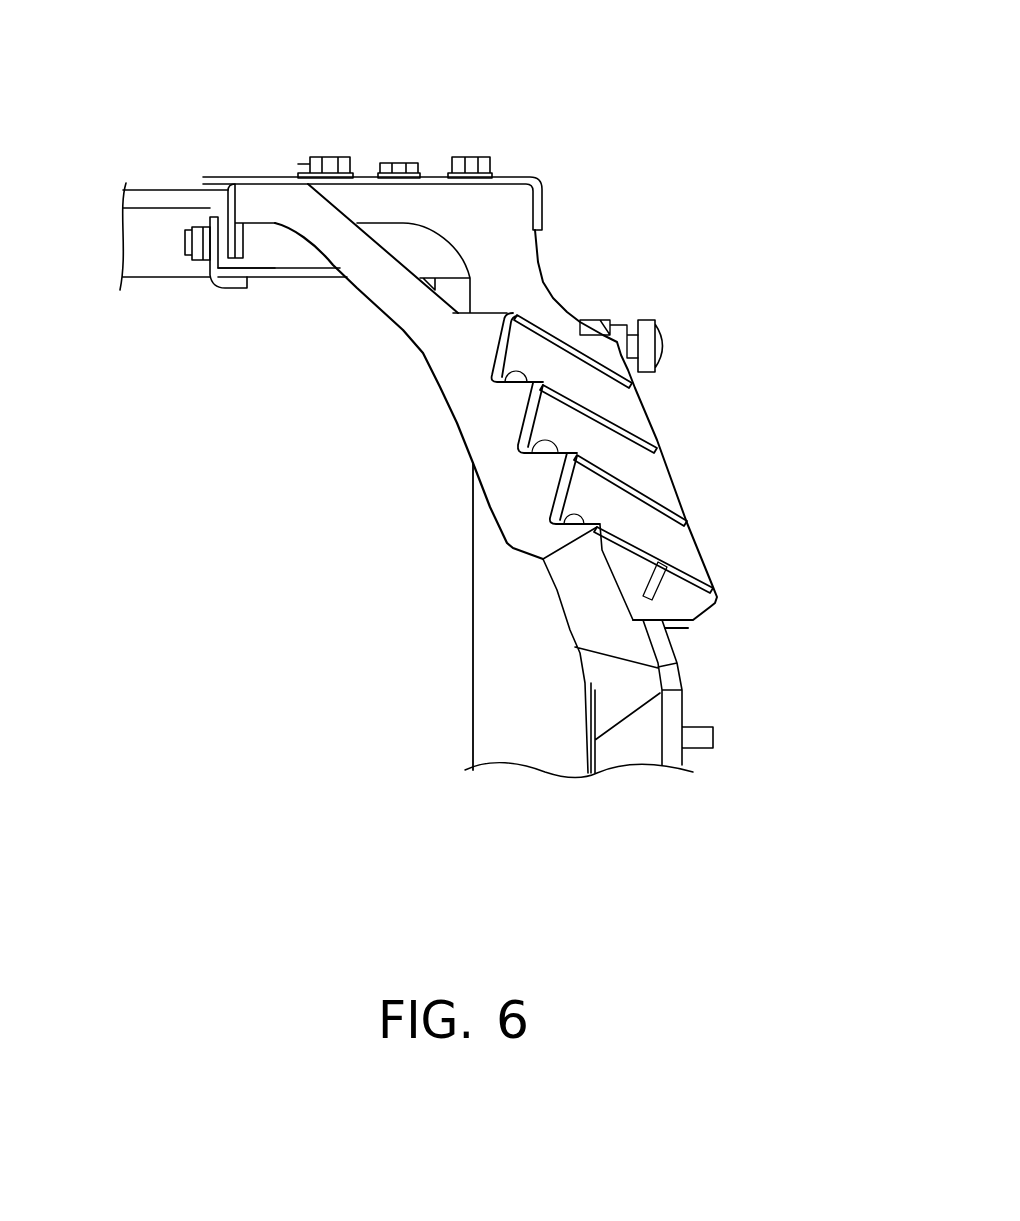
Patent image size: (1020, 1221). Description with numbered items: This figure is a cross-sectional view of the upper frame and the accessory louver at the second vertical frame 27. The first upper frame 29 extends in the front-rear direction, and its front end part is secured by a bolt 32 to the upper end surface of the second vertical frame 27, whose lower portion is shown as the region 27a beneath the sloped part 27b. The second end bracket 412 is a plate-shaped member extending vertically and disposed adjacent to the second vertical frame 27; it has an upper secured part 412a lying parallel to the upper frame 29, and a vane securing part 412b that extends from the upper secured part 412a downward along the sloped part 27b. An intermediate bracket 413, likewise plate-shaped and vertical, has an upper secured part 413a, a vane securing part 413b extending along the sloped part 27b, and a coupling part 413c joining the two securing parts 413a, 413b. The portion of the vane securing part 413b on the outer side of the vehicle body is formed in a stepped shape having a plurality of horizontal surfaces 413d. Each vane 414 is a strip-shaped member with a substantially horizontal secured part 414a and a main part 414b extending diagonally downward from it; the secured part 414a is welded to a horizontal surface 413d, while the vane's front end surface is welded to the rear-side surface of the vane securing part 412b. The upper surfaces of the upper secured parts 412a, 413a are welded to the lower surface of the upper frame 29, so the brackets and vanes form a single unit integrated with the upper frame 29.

The second vertical frame 27 is at (698, 686).
The stay lower portion 27a is at (613, 750).
The sloped part 27b is at (577, 570).
The first upper frame 29 is at (477, 196).
The bolt 32 is at (332, 156).
The second end bracket 412 is at (554, 247).
The upper secured part 412a is at (427, 203).
The vane securing part 412b is at (648, 421).
The intermediate bracket 413 is at (416, 402).
The upper secured part 413a is at (273, 235).
The vane securing part 413b is at (485, 438).
The coupling part 413c is at (393, 290).
The horizontal surface 413d is at (475, 312).
The vane 414 is at (603, 318).
The secured part 414a is at (582, 332).
The main part 414b is at (658, 347).